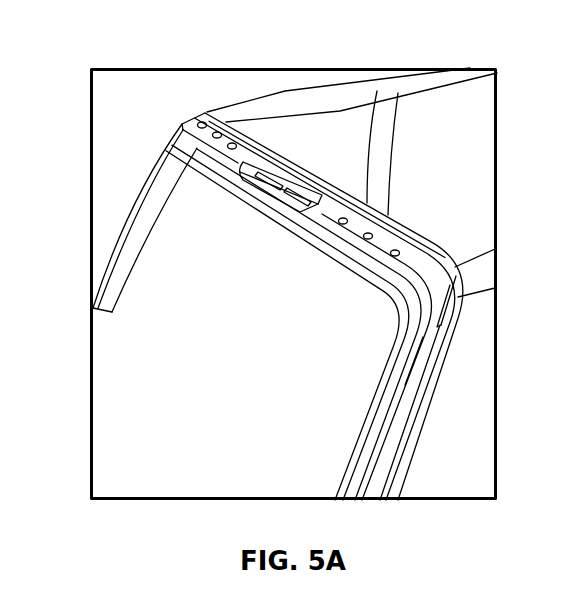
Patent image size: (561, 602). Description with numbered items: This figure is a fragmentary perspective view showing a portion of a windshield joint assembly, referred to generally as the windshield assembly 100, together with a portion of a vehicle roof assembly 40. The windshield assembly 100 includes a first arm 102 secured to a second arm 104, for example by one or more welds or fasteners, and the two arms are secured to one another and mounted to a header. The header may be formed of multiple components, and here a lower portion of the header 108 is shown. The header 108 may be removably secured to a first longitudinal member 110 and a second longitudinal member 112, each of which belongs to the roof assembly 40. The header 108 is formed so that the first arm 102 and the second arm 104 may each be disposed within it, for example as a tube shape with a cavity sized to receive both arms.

The roof assembly 40 is at (330, 78).
The windshield assembly 100 is at (187, 118).
The first arm 102 is at (178, 128).
The second arm 104 is at (447, 305).
The header 108 is at (108, 268).
The first longitudinal member 110 is at (282, 88).
The second longitudinal member 112 is at (478, 252).